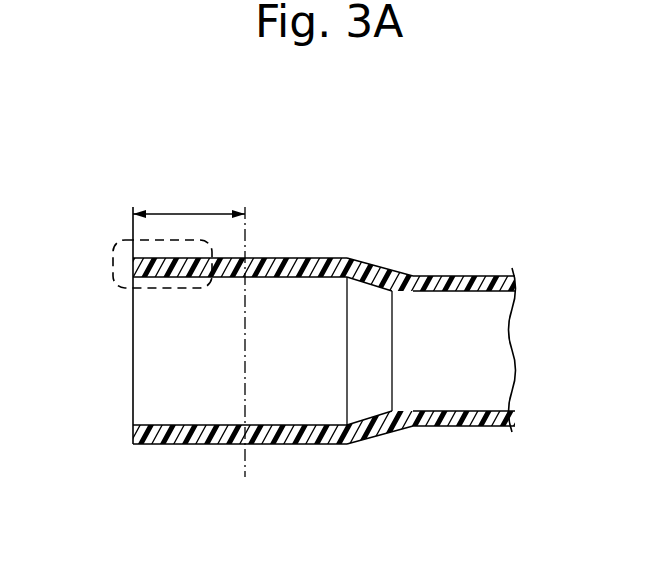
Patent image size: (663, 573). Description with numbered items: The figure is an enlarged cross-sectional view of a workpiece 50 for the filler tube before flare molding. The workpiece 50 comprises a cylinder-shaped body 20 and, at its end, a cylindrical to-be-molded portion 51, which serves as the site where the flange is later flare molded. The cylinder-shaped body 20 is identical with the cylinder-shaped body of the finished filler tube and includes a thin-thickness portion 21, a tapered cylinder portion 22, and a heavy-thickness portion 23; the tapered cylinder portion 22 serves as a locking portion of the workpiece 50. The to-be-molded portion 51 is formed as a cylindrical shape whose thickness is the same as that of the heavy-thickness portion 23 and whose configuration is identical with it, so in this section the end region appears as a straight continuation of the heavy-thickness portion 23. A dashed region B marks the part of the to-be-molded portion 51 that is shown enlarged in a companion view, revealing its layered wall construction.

The workpiece 50 is at (499, 254).
The cylinder-shaped body 20 is at (518, 214).
The to-be-molded portion 51 is at (189, 325).
The thin-thickness portion 21 is at (463, 427).
The tapered cylinder portion 22 is at (377, 430).
The heavy-thickness portion 23 is at (293, 437).
The region B is at (112, 266).